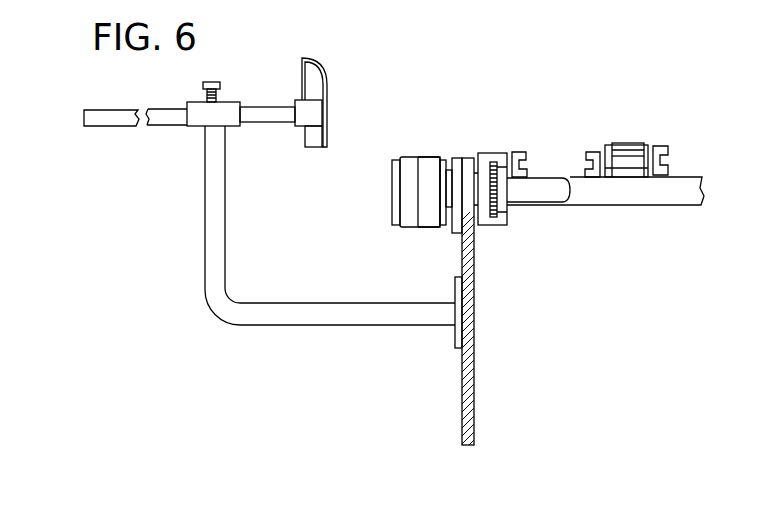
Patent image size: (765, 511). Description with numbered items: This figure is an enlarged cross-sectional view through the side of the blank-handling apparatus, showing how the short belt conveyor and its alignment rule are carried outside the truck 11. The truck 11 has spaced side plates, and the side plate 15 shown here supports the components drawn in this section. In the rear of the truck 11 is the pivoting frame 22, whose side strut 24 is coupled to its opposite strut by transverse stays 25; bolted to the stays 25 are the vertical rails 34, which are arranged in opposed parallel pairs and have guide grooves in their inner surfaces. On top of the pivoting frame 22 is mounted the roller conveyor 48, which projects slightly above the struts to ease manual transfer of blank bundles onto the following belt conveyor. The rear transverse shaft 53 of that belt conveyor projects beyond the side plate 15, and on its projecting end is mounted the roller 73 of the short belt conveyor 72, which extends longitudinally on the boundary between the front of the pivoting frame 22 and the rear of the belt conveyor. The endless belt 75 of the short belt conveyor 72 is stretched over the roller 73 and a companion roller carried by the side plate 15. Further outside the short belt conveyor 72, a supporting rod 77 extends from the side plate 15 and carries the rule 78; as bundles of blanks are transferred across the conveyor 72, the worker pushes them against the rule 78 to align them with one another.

The truck 11 is at (463, 377).
The side plate 15 is at (467, 422).
The pivoting frame 22 is at (665, 205).
The side strut 24 is at (484, 157).
The transverse stays 25 is at (601, 195).
The vertical rails 34 is at (589, 153).
The roller conveyor 48 is at (623, 145).
The transverse shaft 53 is at (548, 190).
The short belt conveyor 72 is at (413, 158).
The roller 73 is at (392, 175).
The endless belt 75 is at (432, 162).
The supporting rod 77 is at (358, 317).
The rule 78 is at (319, 57).